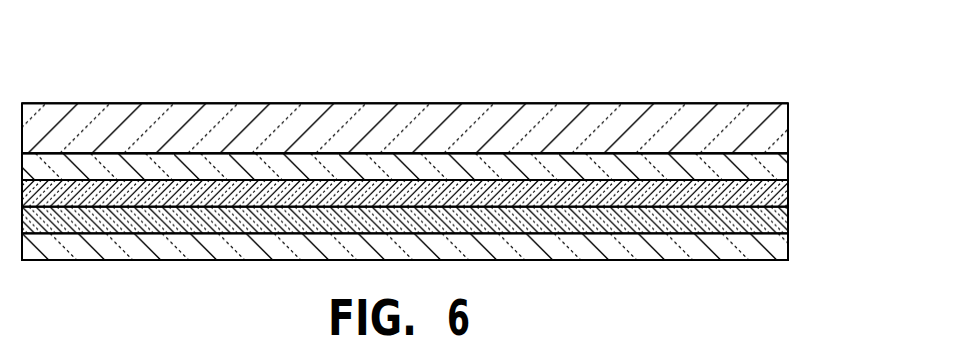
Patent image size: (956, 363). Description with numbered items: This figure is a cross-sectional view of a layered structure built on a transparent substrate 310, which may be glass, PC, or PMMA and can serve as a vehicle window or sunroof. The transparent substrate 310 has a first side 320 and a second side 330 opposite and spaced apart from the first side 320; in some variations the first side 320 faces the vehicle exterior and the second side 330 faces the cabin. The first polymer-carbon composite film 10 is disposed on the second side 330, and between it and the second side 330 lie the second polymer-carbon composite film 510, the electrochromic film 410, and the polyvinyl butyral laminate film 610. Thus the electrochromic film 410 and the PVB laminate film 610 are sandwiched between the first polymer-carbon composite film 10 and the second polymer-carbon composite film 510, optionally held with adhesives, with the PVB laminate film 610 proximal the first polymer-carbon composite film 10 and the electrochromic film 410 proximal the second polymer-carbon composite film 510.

The transparent substrate 310 is at (788, 127).
The first side 320 is at (572, 103).
The second side 330 is at (633, 153).
The second polymer-carbon composite film 510 is at (788, 172).
The electrochromic film 410 is at (788, 190).
The polyvinyl butyral (PVB) laminate film 610 is at (788, 222).
The first polymer-carbon composite film 10 is at (787, 250).